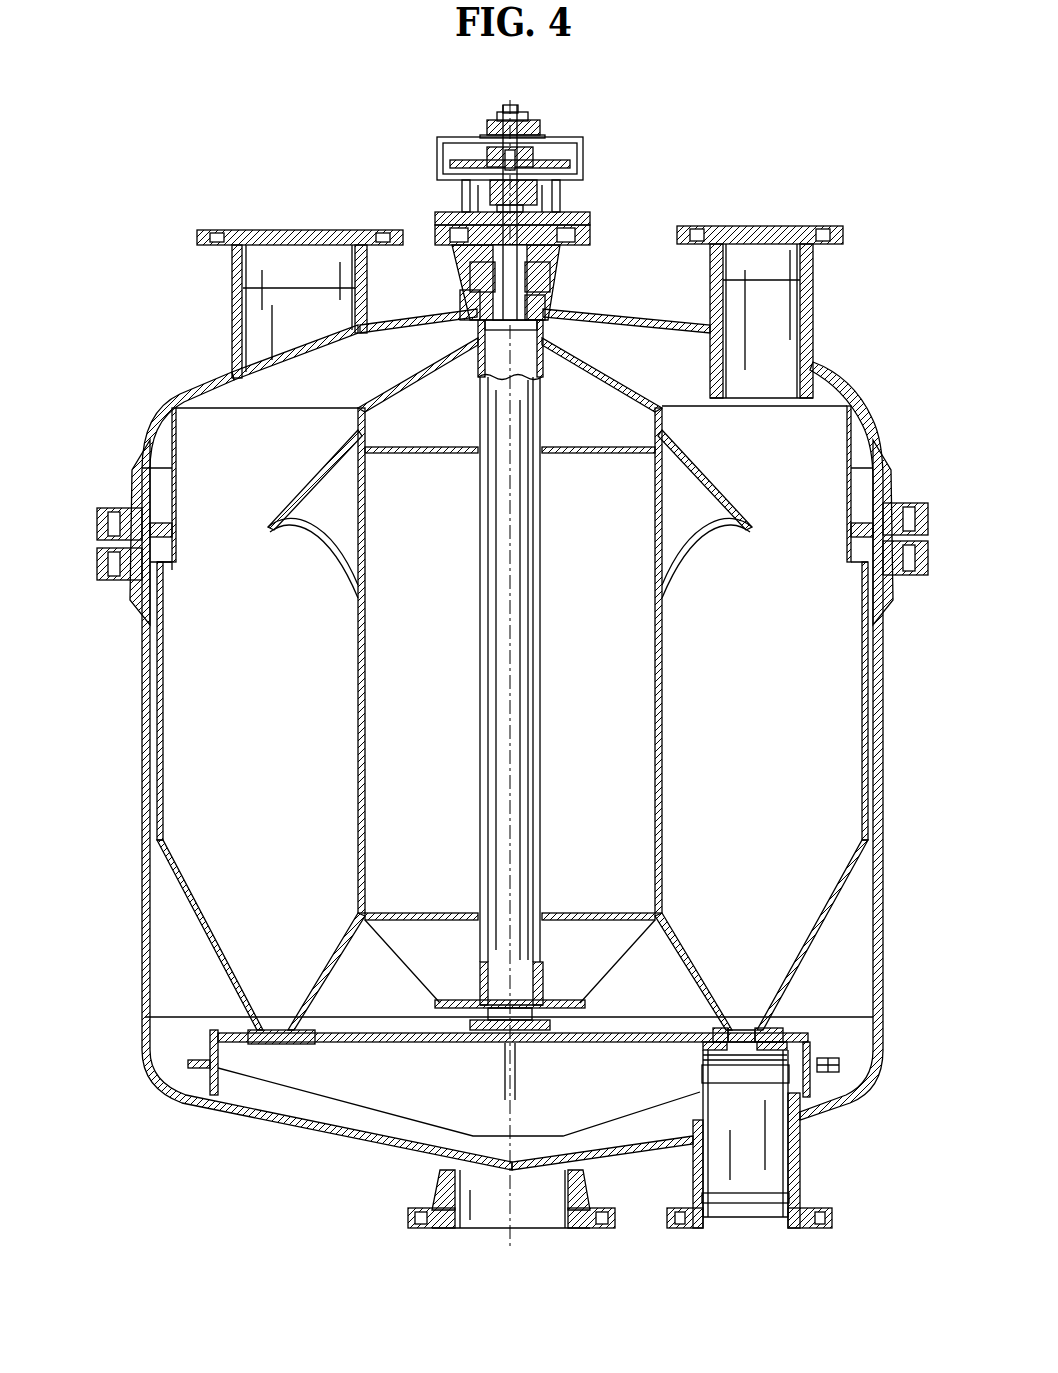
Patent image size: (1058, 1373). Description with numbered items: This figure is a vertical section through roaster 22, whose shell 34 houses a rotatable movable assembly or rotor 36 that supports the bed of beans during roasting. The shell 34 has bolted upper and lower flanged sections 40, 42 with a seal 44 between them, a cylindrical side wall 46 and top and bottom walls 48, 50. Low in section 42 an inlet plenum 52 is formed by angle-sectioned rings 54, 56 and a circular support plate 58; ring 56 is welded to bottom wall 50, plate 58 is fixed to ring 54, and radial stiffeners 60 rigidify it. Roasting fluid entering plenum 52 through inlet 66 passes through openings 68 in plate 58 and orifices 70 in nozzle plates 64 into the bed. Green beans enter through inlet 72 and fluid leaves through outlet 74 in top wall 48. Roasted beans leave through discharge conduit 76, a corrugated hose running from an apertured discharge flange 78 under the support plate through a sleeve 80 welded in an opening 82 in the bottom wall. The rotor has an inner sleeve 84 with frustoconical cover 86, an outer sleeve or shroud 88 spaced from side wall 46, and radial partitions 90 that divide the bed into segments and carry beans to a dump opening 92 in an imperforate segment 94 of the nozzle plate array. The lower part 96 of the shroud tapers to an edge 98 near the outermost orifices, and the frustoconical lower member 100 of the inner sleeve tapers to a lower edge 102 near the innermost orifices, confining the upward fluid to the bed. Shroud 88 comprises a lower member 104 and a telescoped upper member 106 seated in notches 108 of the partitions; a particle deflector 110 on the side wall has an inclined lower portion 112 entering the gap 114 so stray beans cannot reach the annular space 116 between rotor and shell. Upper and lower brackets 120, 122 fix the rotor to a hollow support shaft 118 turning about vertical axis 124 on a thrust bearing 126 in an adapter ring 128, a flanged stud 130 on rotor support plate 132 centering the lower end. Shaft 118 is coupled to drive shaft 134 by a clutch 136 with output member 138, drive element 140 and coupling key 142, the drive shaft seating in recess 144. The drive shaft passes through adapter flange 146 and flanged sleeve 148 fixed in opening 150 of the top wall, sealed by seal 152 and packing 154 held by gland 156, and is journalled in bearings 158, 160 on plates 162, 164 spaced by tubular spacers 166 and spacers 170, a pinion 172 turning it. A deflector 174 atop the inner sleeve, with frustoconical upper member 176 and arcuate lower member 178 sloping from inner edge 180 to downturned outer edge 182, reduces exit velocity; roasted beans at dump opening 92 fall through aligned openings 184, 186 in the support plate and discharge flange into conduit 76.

The roaster 22 is at (130, 322).
The shell 34 is at (895, 792).
The rotor 36 is at (340, 395).
The upper flanged section 40 is at (870, 388).
The lower flanged section 42 is at (880, 855).
The seal 44 is at (125, 510).
The side wall 46 is at (878, 680).
The top wall 48 is at (640, 318).
The bottom wall 50 is at (300, 1142).
The inlet plenum 52 is at (324, 1124).
The upper ring 54 is at (210, 1060).
The lower ring 56 is at (182, 1105).
The support plate 58 is at (640, 1017).
The stiffeners 60 is at (420, 1090).
The nozzle plates 64 is at (262, 1030).
The inlet 66 is at (440, 1190).
The openings 68 is at (290, 1044).
The orifices 70 is at (280, 1030).
The inlet 72 is at (240, 232).
The outlet 74 is at (745, 228).
The discharge conduit 76 is at (746, 1140).
The discharge flange 78 is at (705, 1050).
The sleeve 80 is at (800, 1160).
The opening 82 is at (800, 1120).
The inner sleeve 84 is at (668, 715).
The frustoconical cover 86 is at (590, 372).
The outer sleeve 88 is at (870, 760).
The partitions 90 is at (285, 408).
The dump opening 92 is at (742, 1028).
The imperforate segment 94 is at (768, 1028).
The lower part 96 is at (810, 950).
The edge 98 is at (745, 1015).
The frustoconical lower member 100 is at (695, 958).
The lower edge 102 is at (720, 1032).
The lower member 104 is at (142, 665).
The upper member 106 is at (145, 432).
The notches 108 is at (176, 468).
The particle deflector 110 is at (160, 510).
The lower portion 112 is at (97, 563).
The gap 114 is at (160, 568).
The annular space 116 is at (160, 720).
The support shaft 118 is at (480, 718).
The brackets 120 is at (441, 416).
The brackets 122 is at (435, 946).
The vertical axis 124 is at (520, 718).
The thrust bearing 126 is at (483, 990).
The adapter ring 128 is at (580, 1008).
The flanged stud 130 is at (512, 1043).
The rotor support plate 132 is at (440, 1004).
The rotor drive shaft 134 is at (520, 258).
The clutch 136 is at (468, 290).
The output member 138 is at (545, 318).
The drive element 140 is at (525, 278).
The coupling key 142 is at (470, 300).
The recess 144 is at (550, 300).
The adapter flange 146 is at (435, 218).
The flanged sleeve 148 is at (590, 236).
The opening 150 is at (478, 330).
The seal 152 is at (555, 250).
The packing 154 is at (470, 250).
The gland 156 is at (478, 210).
The bearing 158 is at (503, 115).
The bearing 160 is at (462, 195).
The plate 162 is at (540, 138).
The plate 164 is at (560, 192).
The tubular spacers 166 is at (583, 160).
The spacers 170 is at (560, 205).
The pinion 172 is at (460, 163).
The deflector 174 is at (318, 470).
The frustoconical upper member 176 is at (300, 505).
The lower member 178 is at (300, 525).
The inner edge 180 is at (350, 575).
The outer edge 182 is at (268, 528).
The opening 184 is at (790, 1030).
The opening 186 is at (810, 1048).